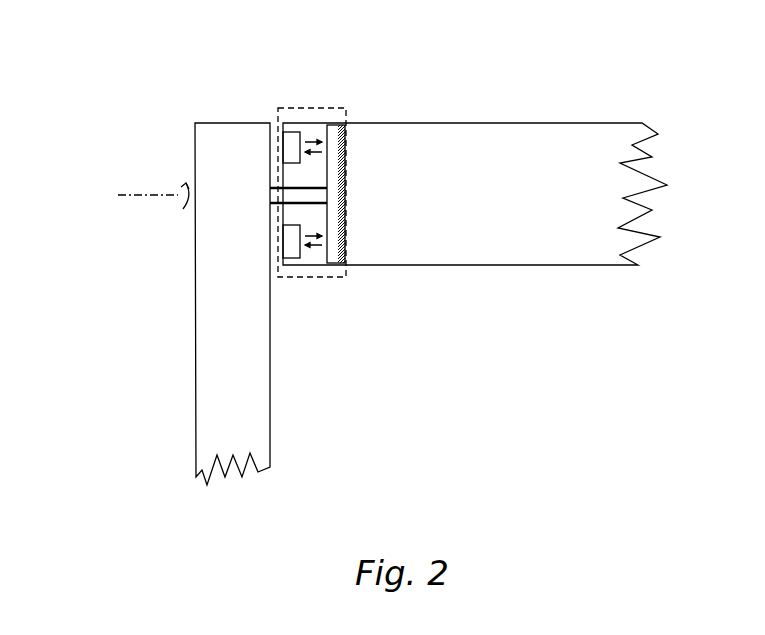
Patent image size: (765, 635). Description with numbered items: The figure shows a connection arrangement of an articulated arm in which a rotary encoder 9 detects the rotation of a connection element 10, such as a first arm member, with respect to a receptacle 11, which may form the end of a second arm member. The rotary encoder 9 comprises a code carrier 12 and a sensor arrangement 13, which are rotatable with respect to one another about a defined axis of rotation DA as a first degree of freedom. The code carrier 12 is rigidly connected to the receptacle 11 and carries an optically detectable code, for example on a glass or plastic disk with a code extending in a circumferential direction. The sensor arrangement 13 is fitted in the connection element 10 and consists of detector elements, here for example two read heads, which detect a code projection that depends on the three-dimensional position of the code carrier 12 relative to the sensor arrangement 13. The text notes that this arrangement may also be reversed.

The rotary encoder 9 is at (330, 107).
The connection element 10 is at (469, 243).
The receptacle 11 is at (252, 322).
The code carrier 12 is at (336, 134).
The sensor arrangement 13 is at (292, 142).
The axis of rotation DA is at (127, 196).